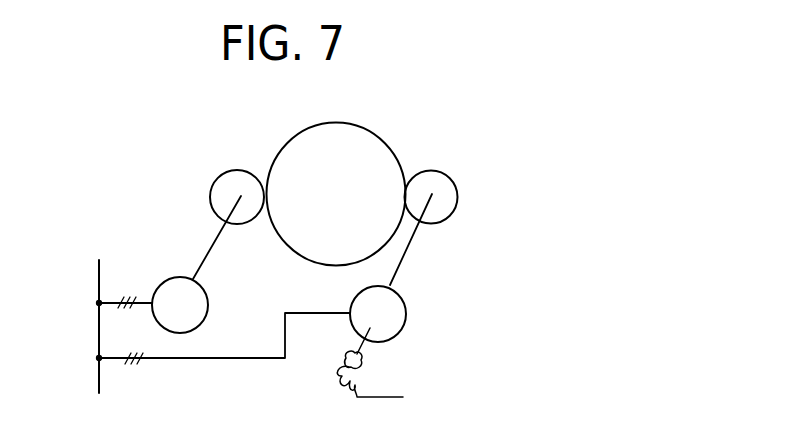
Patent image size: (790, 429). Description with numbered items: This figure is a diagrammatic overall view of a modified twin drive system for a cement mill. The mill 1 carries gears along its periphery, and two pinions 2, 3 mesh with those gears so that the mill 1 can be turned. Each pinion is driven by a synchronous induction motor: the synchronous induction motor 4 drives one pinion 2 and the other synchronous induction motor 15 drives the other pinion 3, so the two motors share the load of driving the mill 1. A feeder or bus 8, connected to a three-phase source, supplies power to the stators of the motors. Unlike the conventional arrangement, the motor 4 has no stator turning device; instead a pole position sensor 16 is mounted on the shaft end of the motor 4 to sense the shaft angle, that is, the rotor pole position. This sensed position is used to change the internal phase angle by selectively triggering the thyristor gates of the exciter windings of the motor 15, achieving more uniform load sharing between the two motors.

The mill 1 is at (373, 128).
The pinion 2 is at (458, 197).
The pinion 3 is at (211, 195).
The synchronous induction motor 4 is at (407, 313).
The feeder or bus 8 is at (99, 325).
The synchronous induction motor 15 is at (168, 276).
The pole position sensor 16 is at (365, 373).